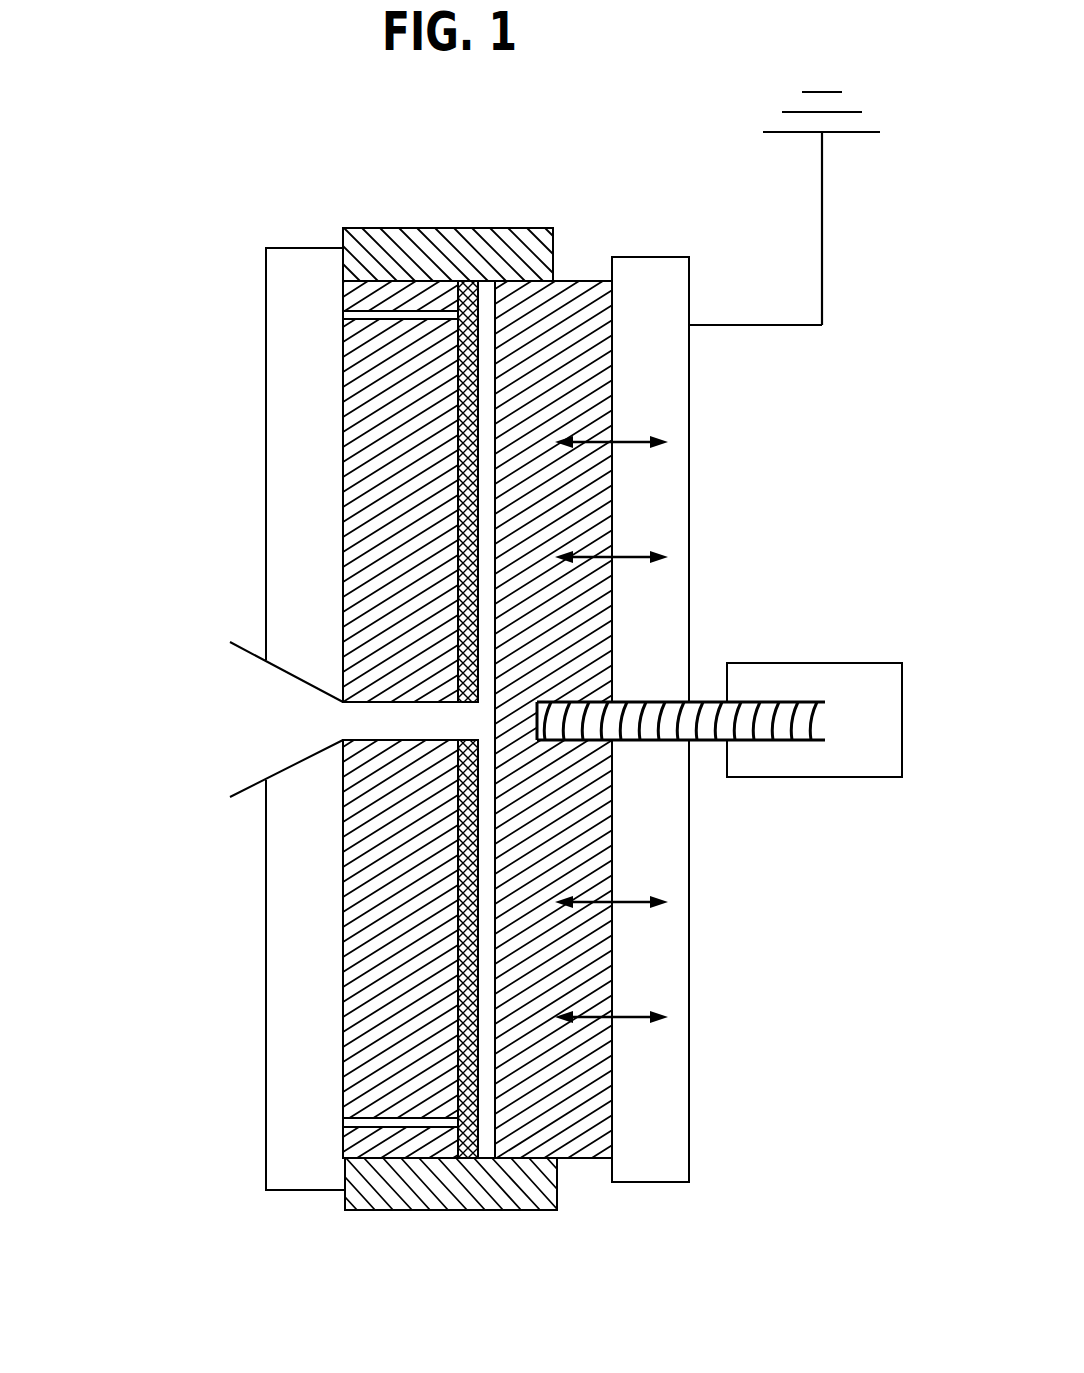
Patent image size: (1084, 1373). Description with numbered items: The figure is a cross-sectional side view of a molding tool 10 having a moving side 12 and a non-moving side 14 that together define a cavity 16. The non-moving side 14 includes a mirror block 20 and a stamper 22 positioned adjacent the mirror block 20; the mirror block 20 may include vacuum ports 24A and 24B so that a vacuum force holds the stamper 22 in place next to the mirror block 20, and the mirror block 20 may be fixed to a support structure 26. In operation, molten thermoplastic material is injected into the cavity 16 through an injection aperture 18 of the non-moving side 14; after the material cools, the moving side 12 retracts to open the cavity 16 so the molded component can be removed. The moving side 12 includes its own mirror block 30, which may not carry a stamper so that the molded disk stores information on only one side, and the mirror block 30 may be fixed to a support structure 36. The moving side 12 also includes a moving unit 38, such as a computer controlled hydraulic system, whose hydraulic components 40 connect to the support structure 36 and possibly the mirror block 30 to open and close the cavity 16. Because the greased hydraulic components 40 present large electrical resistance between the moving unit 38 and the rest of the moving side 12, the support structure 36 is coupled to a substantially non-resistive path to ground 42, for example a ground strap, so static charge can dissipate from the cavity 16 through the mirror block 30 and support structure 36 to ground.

The molding tool 10 is at (160, 297).
The moving side 12 is at (498, 1228).
The non-moving side 14 is at (329, 730).
The cavity 16 is at (487, 305).
The injection aperture 18 is at (370, 720).
The mirror block 20 is at (383, 533).
The stamper 22 is at (460, 455).
The vacuum port 24A is at (393, 303).
The vacuum port 24B is at (397, 1130).
The support structure 26 is at (287, 473).
The mirror block 30 is at (560, 1133).
The support structure 36 is at (648, 288).
The moving unit 38 is at (902, 710).
The hydraulic components 40 is at (740, 690).
The non-resistive path to ground 42 is at (822, 218).